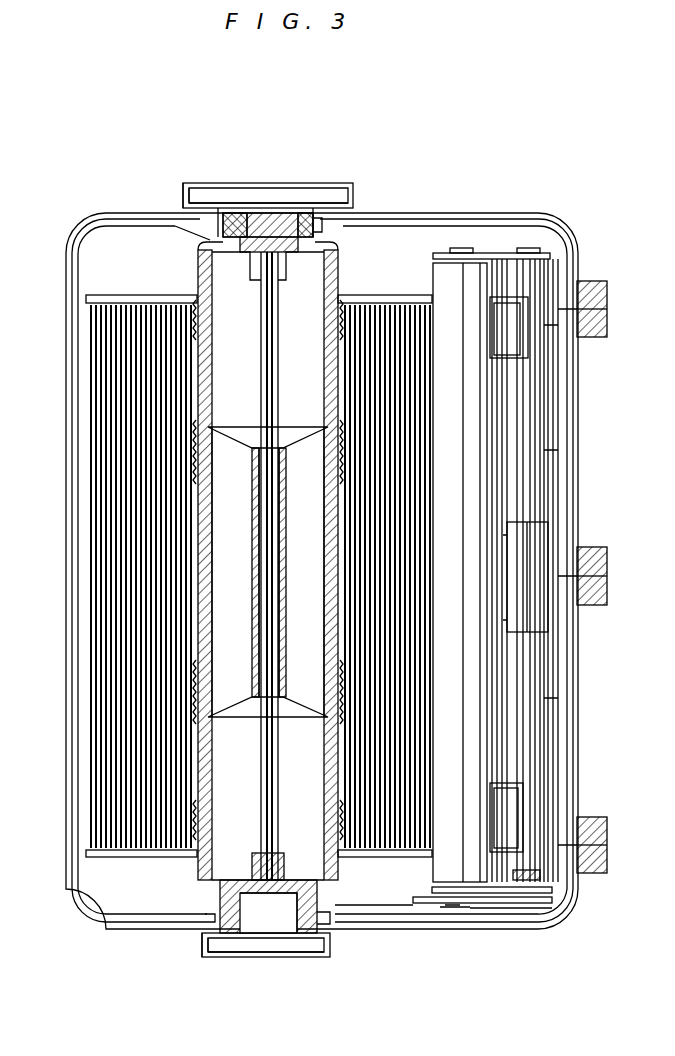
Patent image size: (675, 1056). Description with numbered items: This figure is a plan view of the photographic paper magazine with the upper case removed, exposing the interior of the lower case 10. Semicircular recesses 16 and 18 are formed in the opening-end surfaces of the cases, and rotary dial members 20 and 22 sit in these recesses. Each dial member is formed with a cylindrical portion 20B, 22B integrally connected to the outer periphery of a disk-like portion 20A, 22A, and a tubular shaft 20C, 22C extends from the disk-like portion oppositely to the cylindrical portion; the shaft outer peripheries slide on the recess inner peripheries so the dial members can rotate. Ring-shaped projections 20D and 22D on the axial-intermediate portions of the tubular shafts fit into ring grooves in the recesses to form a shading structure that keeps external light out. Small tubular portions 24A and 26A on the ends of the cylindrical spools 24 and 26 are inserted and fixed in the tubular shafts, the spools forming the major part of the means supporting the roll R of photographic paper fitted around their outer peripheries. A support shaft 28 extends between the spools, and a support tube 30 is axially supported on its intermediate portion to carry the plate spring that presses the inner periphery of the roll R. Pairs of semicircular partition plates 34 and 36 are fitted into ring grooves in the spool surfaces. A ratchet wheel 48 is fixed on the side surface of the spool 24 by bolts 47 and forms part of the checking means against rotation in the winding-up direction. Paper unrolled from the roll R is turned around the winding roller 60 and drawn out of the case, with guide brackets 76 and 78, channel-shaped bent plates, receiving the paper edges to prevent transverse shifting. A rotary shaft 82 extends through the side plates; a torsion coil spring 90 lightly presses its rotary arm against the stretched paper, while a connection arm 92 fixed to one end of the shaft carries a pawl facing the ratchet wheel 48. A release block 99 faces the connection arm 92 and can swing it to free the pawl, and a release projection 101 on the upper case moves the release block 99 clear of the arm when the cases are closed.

The lower case 10 is at (488, 213).
The semicircular recess 16 is at (305, 927).
The semicircular recess 18 is at (302, 210).
The rotary dial member 20 is at (203, 955).
The disk-like portion 20A is at (238, 947).
The cylindrical portion 20B is at (207, 943).
The tubular shaft 20C is at (268, 906).
The ring-shaped projection 20D is at (318, 927).
The rotary dial member 22 is at (208, 175).
The disk-like portion 22A is at (278, 207).
The cylindrical portion 22B is at (185, 190).
The tubular shaft 22C is at (300, 228).
The ring-shaped projection 22D is at (338, 227).
The cylindrical spool 24 is at (200, 872).
The small tubular portion 24A is at (290, 923).
The cylindrical spool 26 is at (340, 263).
The small tubular portion 26A is at (243, 210).
The support shaft 28 is at (279, 352).
The support tube 30 is at (303, 426).
The partition plate 34 is at (116, 857).
The partition plate 36 is at (134, 296).
The bolt 47 is at (212, 880).
The ratchet wheel 48 is at (345, 903).
The winding roller 60 is at (455, 488).
The guide bracket 76 is at (510, 812).
The guide bracket 78 is at (512, 338).
The rotary shaft 82 is at (545, 418).
The torsion coil spring 90 is at (557, 878).
The connection arm 92 is at (424, 905).
The release block 99 is at (435, 903).
The release projection 101 is at (485, 912).
The roll of photographic paper R is at (88, 660).